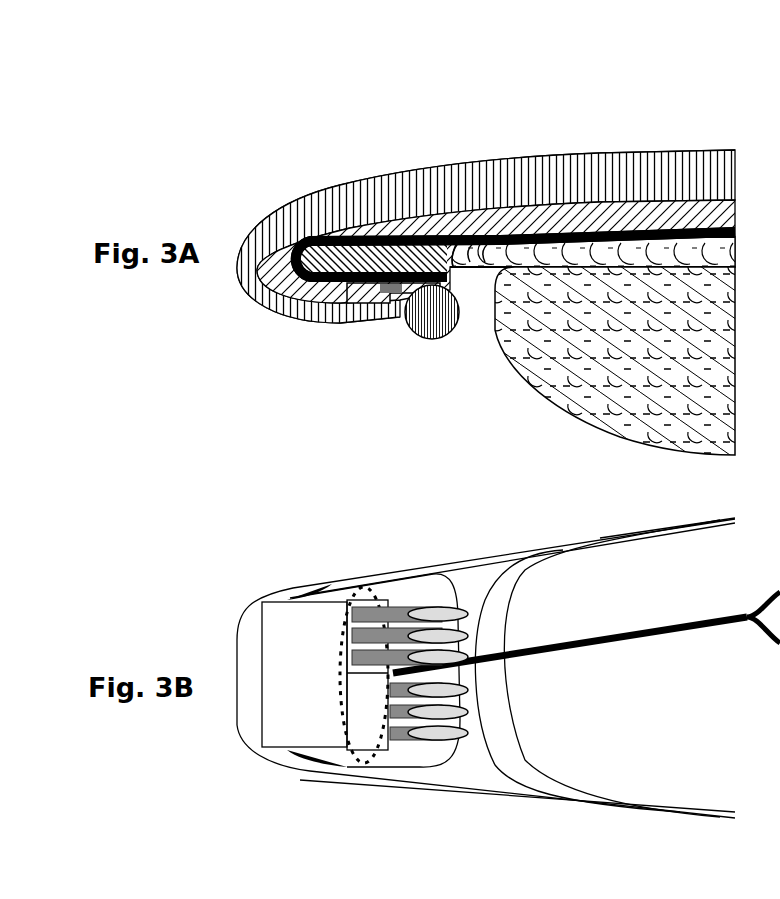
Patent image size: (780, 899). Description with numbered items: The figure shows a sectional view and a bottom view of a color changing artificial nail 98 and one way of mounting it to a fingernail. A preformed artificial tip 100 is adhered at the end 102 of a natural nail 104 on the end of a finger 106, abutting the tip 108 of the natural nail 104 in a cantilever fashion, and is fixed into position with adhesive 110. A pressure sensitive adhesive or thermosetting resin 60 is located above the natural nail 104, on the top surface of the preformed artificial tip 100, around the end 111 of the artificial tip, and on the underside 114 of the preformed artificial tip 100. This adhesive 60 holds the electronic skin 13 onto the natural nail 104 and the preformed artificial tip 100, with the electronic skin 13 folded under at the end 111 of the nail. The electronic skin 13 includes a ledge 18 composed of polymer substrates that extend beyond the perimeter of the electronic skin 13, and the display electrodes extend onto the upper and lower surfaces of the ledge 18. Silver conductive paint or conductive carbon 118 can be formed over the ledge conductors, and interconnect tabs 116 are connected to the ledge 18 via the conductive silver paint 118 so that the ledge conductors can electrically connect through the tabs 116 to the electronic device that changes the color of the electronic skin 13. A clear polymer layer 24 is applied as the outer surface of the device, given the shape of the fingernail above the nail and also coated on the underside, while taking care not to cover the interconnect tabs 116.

In FIG. 3A, the color changing artificial nail 98 is at (486, 183).
In FIG. 3A, the clear polymer layer 24 is at (258, 232).
In FIG. 3B, the clear polymer layer 24 is at (193, 462).
In FIG. 3A, the electronic skin 13 is at (278, 265).
In FIG. 3B, the electronic skin 13 is at (297, 663).
In FIG. 3A, the pressure sensitive adhesive or thermosetting resin 60 is at (327, 287).
In FIG. 3B, the pressure sensitive adhesive or thermosetting resin 60 is at (308, 582).
In FIG. 3A, the preformed artificial tip 100 is at (352, 250).
In FIG. 3B, the preformed artificial tip 100 is at (460, 777).
In FIG. 3A, the end of natural nail 102 is at (503, 250).
In FIG. 3A, the natural nail 104 is at (562, 245).
In FIG. 3B, the natural nail 104 is at (562, 558).
In FIG. 3A, the finger 106 is at (683, 355).
In FIG. 3B, the finger 106 is at (685, 552).
In FIG. 3A, the end of natural nail 108 is at (476, 255).
In FIG. 3A, the adhesive 110 is at (461, 240).
In FIG. 3B, the adhesive 110 is at (492, 577).
In FIG. 3A, the end of artificial tip 111 is at (290, 247).
In FIG. 3A, the underside of preformed artificial tip 114 is at (400, 240).
In FIG. 3A, the interconnect tabs 116 is at (433, 312).
In FIG. 3B, the interconnect tabs 116 is at (438, 614).
In FIG. 3A, the conductive silver paint or conductive carbon 118 is at (394, 482).
In FIG. 3B, the conductive silver paint or conductive carbon 118 is at (394, 617).
In FIG. 3A, the ledge 18 is at (375, 300).
In FIG. 3B, the ledge 18 is at (360, 760).